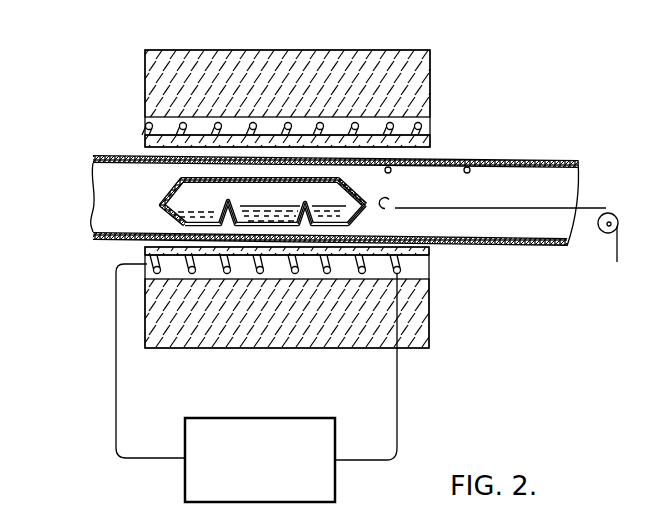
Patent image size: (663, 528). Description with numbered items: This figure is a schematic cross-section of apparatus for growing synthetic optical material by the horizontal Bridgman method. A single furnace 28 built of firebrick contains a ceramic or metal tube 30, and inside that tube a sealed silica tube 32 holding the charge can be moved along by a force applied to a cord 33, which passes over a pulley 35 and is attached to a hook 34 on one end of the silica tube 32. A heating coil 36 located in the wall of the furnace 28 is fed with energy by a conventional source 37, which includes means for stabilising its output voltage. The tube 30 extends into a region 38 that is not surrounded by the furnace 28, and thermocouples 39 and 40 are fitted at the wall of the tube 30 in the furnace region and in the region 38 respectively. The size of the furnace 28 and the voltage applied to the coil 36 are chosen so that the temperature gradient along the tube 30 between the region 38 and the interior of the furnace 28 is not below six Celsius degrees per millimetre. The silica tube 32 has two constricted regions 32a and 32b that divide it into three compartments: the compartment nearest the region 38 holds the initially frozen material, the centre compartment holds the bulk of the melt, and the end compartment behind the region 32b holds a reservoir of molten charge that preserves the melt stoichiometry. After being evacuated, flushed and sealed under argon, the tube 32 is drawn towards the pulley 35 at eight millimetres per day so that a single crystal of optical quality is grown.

The furnace 28 is at (207, 57).
The ceramic or metal tube 30 is at (118, 239).
The silica tube 32 is at (158, 185).
The constricted region 32a is at (307, 230).
The constricted region 32b is at (227, 207).
The cord 33 is at (518, 210).
The hook 34 is at (374, 203).
The pulley 35 is at (607, 213).
The heating coil 36 is at (170, 127).
The source 37 is at (337, 475).
The region 38 is at (543, 163).
The thermocouple 39 is at (392, 170).
The thermocouple 40 is at (470, 172).